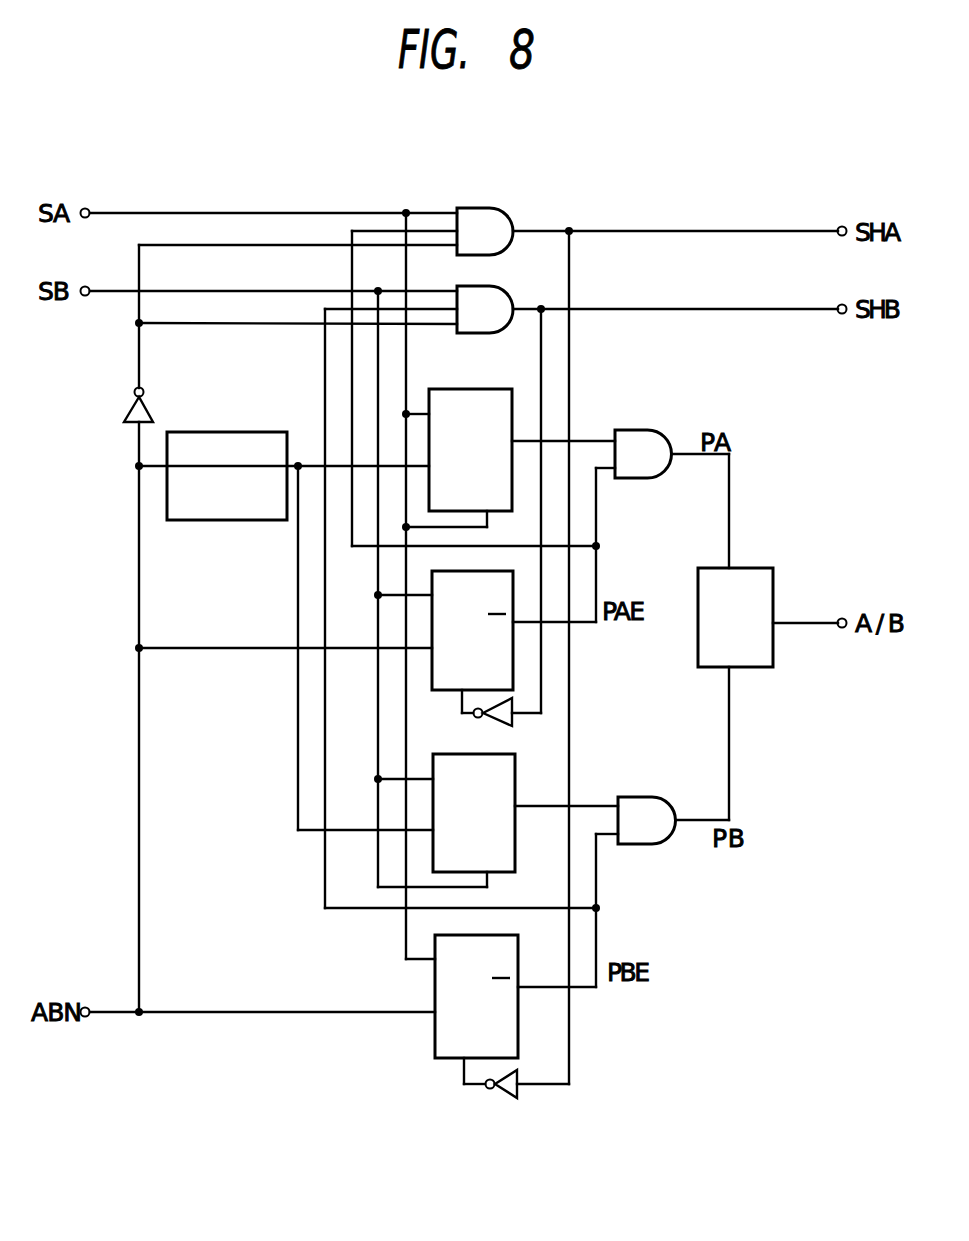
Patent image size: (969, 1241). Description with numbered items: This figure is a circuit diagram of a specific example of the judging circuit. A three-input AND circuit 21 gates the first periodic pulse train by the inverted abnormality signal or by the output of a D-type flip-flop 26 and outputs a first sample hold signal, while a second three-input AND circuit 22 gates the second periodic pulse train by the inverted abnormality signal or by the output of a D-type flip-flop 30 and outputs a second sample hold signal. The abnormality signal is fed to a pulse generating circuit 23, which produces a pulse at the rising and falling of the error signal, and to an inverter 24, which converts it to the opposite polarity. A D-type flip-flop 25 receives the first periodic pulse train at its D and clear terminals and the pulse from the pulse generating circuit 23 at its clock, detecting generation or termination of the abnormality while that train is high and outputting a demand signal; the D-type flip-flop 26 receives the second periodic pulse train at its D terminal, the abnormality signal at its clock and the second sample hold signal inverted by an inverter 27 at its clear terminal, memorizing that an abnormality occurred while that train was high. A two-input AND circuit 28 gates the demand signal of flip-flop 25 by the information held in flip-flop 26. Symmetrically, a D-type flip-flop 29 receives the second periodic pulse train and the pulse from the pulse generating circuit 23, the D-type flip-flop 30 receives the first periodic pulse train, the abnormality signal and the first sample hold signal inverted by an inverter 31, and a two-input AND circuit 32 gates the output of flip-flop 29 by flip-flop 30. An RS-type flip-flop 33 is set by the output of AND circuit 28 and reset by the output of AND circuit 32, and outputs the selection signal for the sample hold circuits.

The three-input AND circuit 21 is at (490, 208).
The three-input AND circuit 22 is at (506, 300).
The pulse generating circuit 23 is at (241, 432).
The inverter 24 is at (153, 411).
The D-type flip-flop 25 is at (492, 391).
The D-type flip-flop 26 is at (490, 571).
The inverter 27 is at (492, 727).
The two-input AND circuit 28 is at (646, 434).
The D-type flip-flop 29 is at (517, 773).
The D-type flip-flop 30 is at (520, 964).
The inverter 31 is at (498, 1091).
The two-input AND circuit 32 is at (645, 797).
The RS-type flip-flop 33 is at (748, 568).